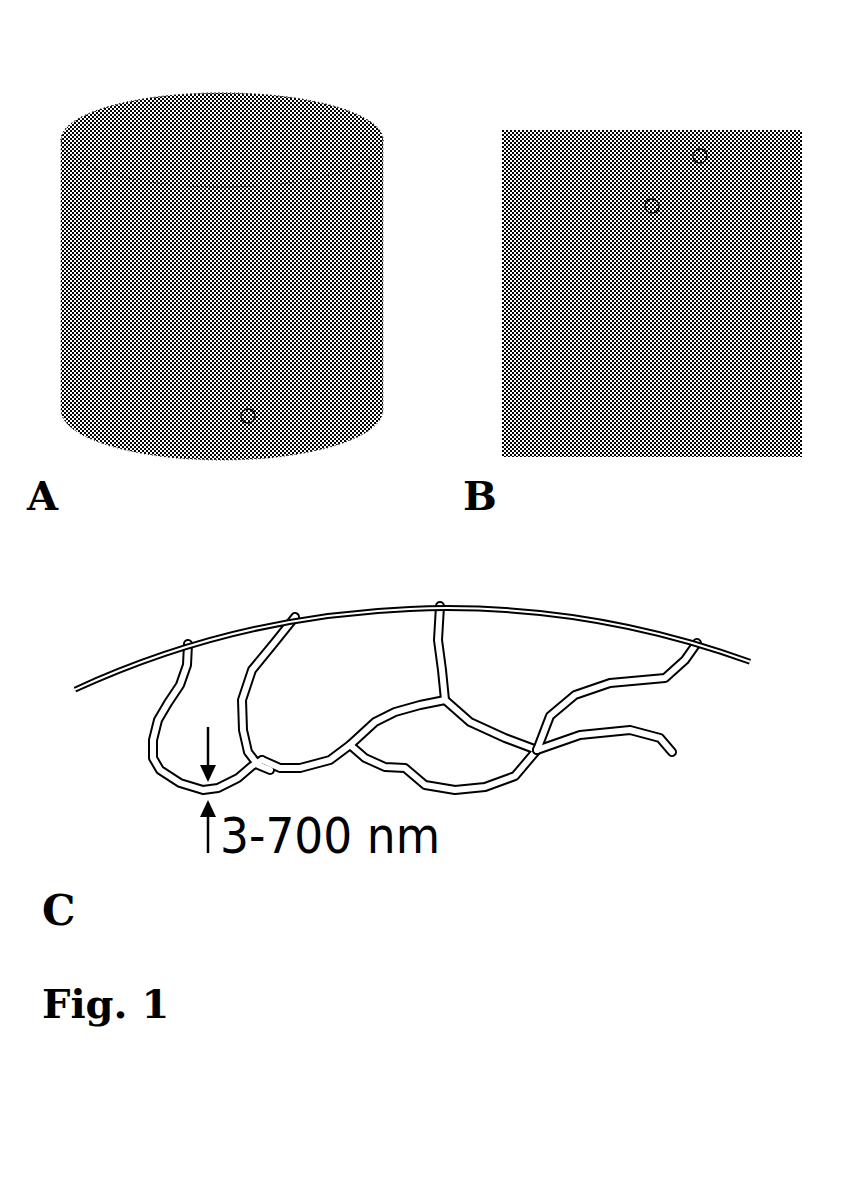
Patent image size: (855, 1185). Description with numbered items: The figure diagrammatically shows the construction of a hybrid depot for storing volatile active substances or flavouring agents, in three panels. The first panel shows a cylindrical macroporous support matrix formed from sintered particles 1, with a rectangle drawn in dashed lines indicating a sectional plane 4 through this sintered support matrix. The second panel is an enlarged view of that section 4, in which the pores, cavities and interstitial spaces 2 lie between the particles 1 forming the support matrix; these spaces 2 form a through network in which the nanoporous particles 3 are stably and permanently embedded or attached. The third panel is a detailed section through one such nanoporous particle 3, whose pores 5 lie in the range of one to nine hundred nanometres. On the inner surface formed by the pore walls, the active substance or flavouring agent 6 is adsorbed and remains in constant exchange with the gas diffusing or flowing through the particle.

The sintered particles 1 is at (250, 413).
The pores, cavities and interstitial spaces 2 is at (652, 203).
The nanoporous particles 3 is at (700, 153).
The sectional plane 4 is at (200, 192).
The pores 5 is at (517, 780).
The active substance or flavouring agent 6 is at (537, 760).